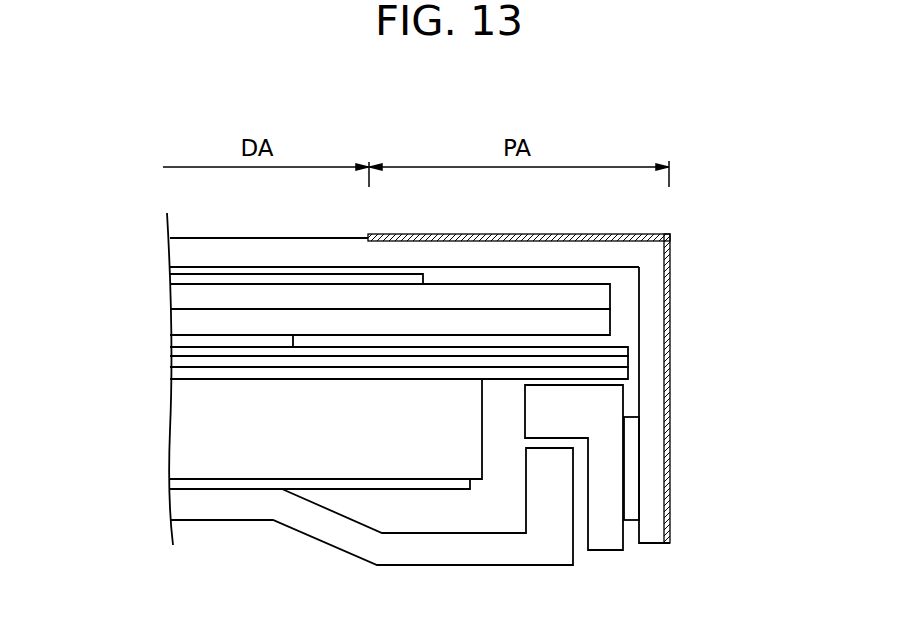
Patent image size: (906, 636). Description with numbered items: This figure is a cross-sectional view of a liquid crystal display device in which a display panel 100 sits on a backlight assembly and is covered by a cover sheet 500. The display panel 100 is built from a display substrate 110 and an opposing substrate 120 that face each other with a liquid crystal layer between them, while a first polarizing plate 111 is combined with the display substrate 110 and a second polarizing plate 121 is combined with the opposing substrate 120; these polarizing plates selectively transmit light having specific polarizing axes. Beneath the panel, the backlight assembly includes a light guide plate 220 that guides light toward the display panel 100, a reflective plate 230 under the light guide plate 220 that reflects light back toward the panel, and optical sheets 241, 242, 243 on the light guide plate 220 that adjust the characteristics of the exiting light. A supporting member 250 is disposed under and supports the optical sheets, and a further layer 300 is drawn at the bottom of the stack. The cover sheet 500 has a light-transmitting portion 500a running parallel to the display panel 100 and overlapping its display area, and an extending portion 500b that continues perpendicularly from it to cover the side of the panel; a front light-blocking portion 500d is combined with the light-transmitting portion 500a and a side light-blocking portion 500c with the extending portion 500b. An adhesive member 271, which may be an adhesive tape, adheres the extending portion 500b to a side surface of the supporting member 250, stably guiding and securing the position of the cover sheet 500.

The display panel 100 is at (92, 248).
The second polarizing plate 121 is at (177, 271).
The opposing substrate 120 is at (177, 281).
The display substrate 110 is at (177, 298).
The first polarizing plate 111 is at (177, 323).
The optical sheet 241 is at (177, 351).
The optical sheet 242 is at (177, 361).
The optical sheet 243 is at (172, 375).
The light guide plate 220 is at (176, 424).
The reflective plate 230 is at (176, 482).
The flexible printed circuit board 300 is at (172, 505).
The supporting member 250 is at (604, 551).
The adhesive member 271 is at (632, 470).
The cover sheet 500 is at (765, 186).
The light-transmitting portion 500a is at (608, 250).
The extending portion 500b is at (657, 291).
The side light-blocking portion 500c is at (670, 325).
The front light-blocking portion 500d is at (636, 236).